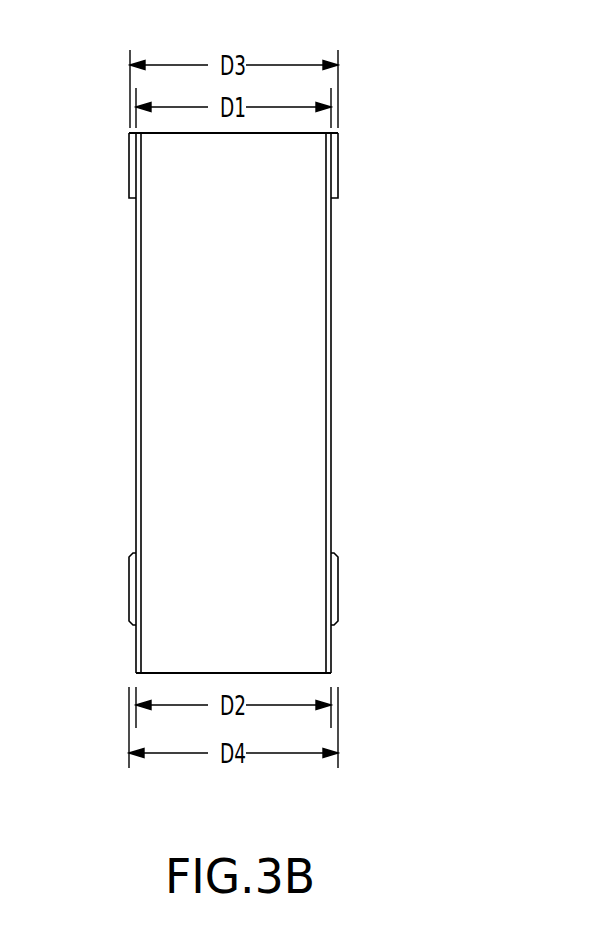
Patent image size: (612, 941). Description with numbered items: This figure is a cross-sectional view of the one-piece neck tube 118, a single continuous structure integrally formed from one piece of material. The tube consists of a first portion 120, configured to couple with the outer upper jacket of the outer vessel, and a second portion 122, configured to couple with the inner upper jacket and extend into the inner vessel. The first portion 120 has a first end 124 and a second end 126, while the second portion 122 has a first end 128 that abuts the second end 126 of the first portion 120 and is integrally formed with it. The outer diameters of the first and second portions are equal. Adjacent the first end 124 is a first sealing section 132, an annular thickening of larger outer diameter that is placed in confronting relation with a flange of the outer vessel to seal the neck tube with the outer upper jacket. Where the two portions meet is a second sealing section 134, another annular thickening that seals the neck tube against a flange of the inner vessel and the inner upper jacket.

The one-piece neck tube 118 is at (87, 92).
The first portion 120 is at (389, 220).
The second portion 122 is at (343, 655).
The first end of the first portion 124 is at (361, 110).
The second end of the first portion 126 is at (358, 547).
The first end of the second portion 128 is at (357, 583).
The first sealing section 132 is at (140, 153).
The second sealing section 134 is at (130, 588).